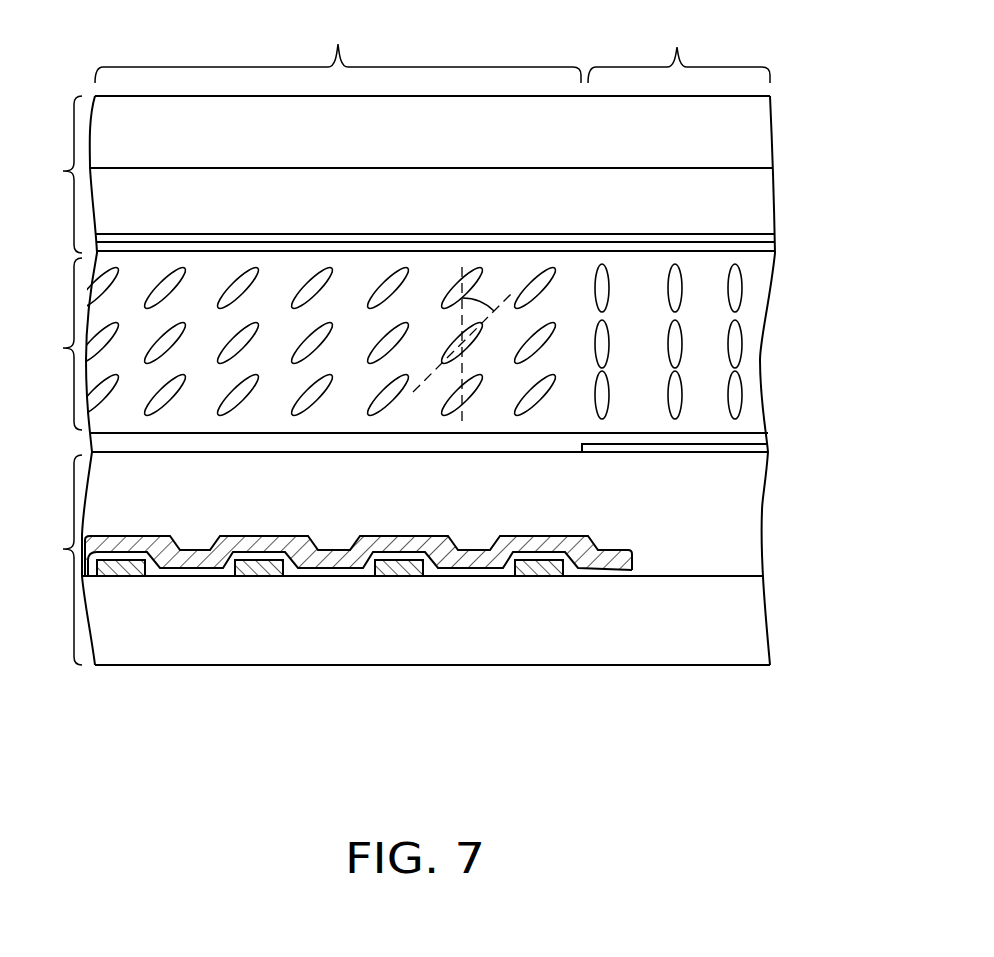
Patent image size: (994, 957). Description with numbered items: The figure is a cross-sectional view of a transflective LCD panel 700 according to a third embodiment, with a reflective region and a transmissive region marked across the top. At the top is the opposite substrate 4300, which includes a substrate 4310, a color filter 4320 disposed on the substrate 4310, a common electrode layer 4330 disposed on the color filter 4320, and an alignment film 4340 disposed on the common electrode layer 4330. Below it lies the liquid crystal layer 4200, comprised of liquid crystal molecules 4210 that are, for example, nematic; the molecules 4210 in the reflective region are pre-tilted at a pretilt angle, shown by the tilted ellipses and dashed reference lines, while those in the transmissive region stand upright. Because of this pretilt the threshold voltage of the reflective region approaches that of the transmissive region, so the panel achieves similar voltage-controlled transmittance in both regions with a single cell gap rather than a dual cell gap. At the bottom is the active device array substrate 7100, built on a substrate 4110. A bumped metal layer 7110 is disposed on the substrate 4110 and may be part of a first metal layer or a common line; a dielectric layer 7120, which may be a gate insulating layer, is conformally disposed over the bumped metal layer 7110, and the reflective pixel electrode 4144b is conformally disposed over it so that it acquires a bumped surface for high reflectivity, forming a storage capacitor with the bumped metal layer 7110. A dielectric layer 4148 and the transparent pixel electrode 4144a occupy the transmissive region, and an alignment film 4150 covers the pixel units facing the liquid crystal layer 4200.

The transflective LCD panel 700 is at (792, 766).
The opposite substrate 4300 is at (45, 174).
The substrate 4310 is at (738, 133).
The color filter 4320 is at (738, 193).
The common electrode layer 4330 is at (757, 238).
The alignment film 4340 is at (762, 245).
The liquid crystal layer 4200 is at (45, 344).
The liquid crystal molecules 4210 is at (733, 347).
The alignment film 4150 is at (765, 433).
The transparent pixel electrode 4144a is at (752, 448).
The dielectric layer 4148 is at (740, 475).
The reflective pixel electrode 4144b is at (622, 552).
The active device array substrate 7100 is at (45, 560).
The dielectric layer 7120 is at (622, 575).
The bumped metal layer 7110 is at (545, 577).
The substrate 4110 is at (745, 638).